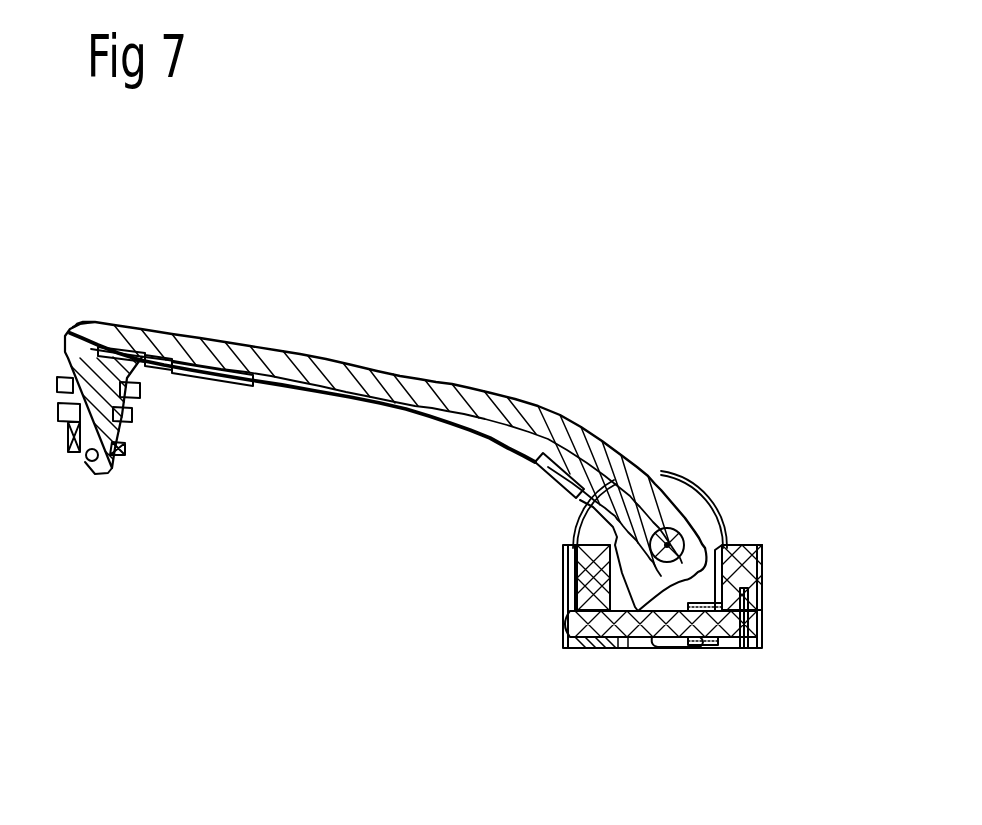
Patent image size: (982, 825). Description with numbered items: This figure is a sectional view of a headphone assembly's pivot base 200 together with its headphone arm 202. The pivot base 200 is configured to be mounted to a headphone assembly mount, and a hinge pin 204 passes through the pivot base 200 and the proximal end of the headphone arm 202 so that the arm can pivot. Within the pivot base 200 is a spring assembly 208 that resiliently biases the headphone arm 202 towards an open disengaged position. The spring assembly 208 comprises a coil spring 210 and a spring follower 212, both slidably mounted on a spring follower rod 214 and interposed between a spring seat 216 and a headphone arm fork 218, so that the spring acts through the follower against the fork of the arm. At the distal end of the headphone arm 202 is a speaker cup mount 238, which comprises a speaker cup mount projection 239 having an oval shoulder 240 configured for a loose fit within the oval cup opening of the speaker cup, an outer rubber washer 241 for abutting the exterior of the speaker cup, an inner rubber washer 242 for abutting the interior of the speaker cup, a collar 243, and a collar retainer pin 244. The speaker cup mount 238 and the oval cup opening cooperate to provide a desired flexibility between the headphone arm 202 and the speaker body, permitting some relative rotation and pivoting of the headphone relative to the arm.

The pivot base 200 is at (566, 577).
The headphone arm 202 is at (427, 377).
The hinge pin 204 is at (668, 542).
The spring assembly 208 is at (680, 660).
The coil spring 210 is at (707, 647).
The spring follower 212 is at (675, 645).
The spring follower rod 214 is at (600, 625).
The spring seat 216 is at (722, 588).
The headphone arm fork 218 is at (650, 641).
The speaker cup mount 238 is at (100, 301).
The speaker cup mount projection 239 is at (86, 466).
The oval shoulder 240 is at (135, 399).
The outer rubber washer 241 is at (150, 389).
The inner rubber washer 242 is at (140, 418).
The collar 243 is at (125, 452).
The collar retainer pin 244 is at (105, 460).